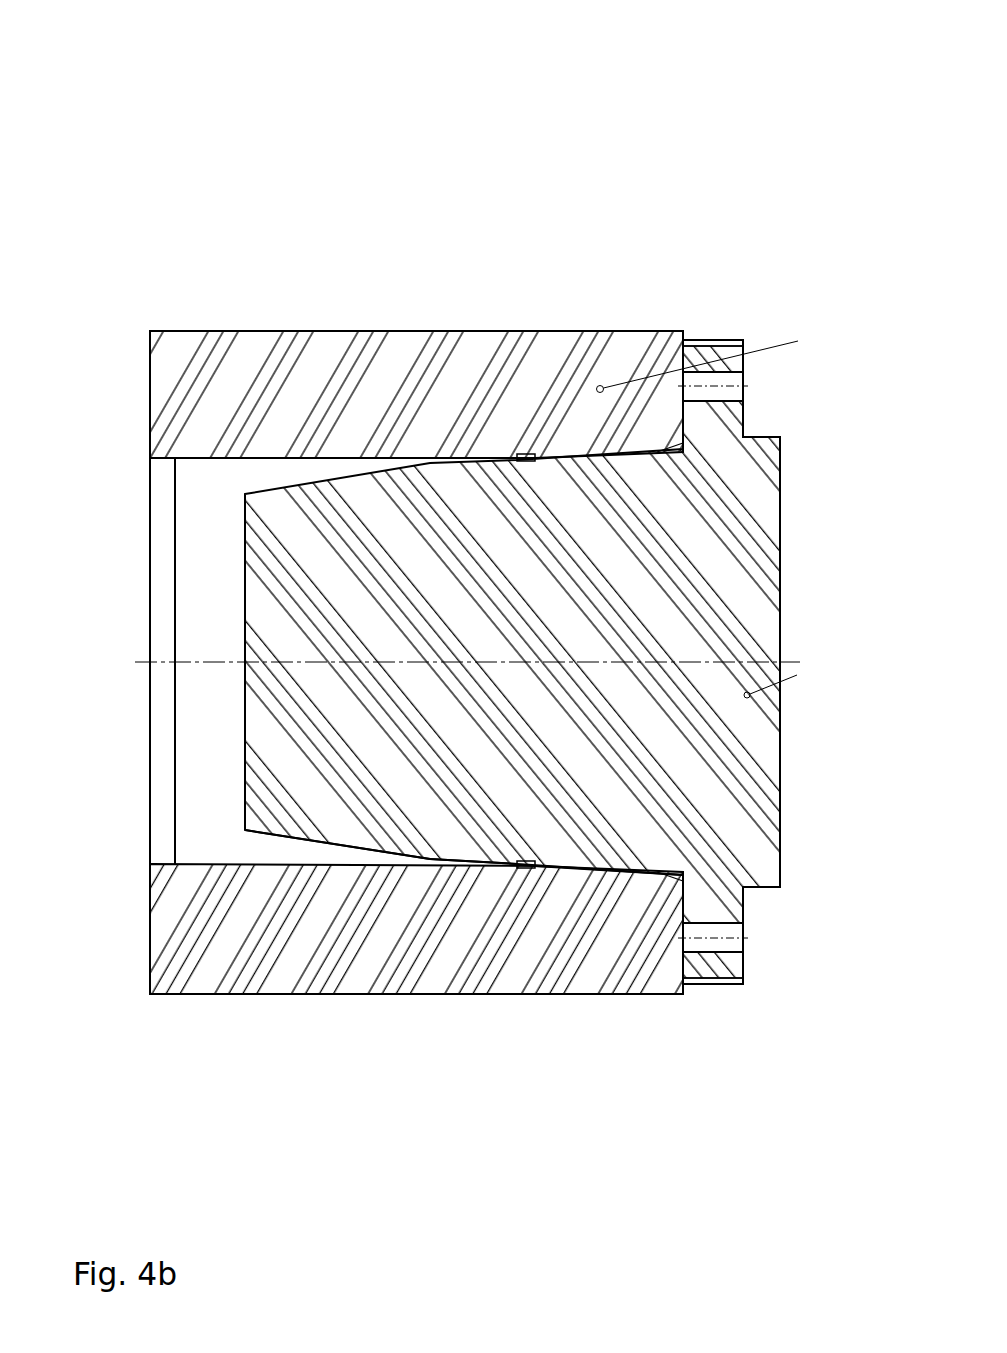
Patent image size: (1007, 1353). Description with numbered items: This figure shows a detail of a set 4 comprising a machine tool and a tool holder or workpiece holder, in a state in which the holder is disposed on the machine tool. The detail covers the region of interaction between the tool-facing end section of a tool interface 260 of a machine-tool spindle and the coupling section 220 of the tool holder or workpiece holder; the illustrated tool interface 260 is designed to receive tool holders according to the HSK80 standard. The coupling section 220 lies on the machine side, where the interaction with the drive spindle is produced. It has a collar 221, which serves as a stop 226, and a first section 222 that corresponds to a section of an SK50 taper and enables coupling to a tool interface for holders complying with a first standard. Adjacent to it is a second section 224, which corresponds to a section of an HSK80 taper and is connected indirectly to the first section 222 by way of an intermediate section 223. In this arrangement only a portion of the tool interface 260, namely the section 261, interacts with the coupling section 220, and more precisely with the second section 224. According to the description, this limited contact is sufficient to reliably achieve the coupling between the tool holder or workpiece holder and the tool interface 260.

The set 4 is at (437, 562).
The coupling section 220 is at (324, 556).
The collar 221 is at (742, 937).
The first section 222 is at (317, 845).
The intermediate section 223 is at (493, 866).
The second section 224 is at (636, 862).
The stop 226 is at (686, 337).
The tool interface 260 is at (190, 395).
The section 261 is at (485, 328).